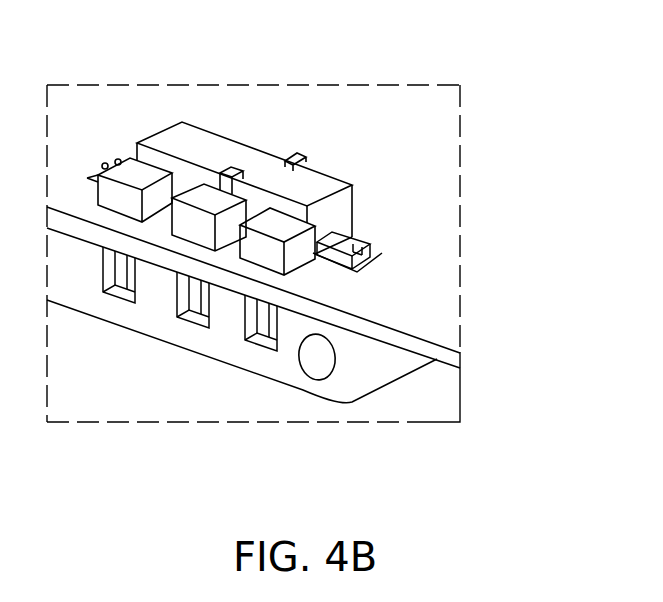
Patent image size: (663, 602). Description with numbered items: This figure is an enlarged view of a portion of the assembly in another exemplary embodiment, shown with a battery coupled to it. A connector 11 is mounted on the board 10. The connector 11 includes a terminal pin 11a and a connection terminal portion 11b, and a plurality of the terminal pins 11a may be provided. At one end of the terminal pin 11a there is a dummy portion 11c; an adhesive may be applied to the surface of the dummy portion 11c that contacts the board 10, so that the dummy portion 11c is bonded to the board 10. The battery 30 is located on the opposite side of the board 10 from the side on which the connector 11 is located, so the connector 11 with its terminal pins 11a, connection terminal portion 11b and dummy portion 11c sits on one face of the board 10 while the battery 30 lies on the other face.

The board 10 is at (435, 270).
The connector 11 is at (213, 147).
The terminal pin 11a is at (268, 322).
The connection terminal portion 11b is at (343, 243).
The dummy portion 11c is at (303, 243).
The battery 30 is at (383, 368).